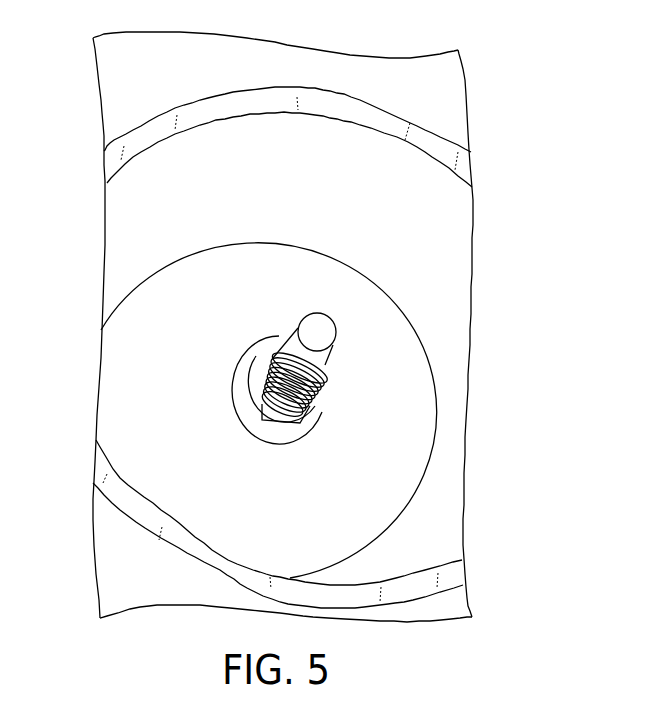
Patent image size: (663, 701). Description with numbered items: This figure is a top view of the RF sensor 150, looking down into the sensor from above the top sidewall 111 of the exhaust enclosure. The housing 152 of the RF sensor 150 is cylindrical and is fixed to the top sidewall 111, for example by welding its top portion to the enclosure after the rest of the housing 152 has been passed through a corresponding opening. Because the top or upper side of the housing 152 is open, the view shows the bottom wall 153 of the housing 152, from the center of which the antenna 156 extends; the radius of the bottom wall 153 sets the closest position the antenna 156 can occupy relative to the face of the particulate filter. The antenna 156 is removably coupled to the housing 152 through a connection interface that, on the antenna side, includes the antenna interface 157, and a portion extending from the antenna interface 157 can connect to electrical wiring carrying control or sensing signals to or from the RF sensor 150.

The top sidewall 111 is at (133, 88).
The housing 152 is at (148, 182).
The bottom wall 153 is at (150, 469).
The RF sensor 150 is at (483, 243).
The antenna 156 is at (245, 379).
The antenna interface 157 is at (314, 386).